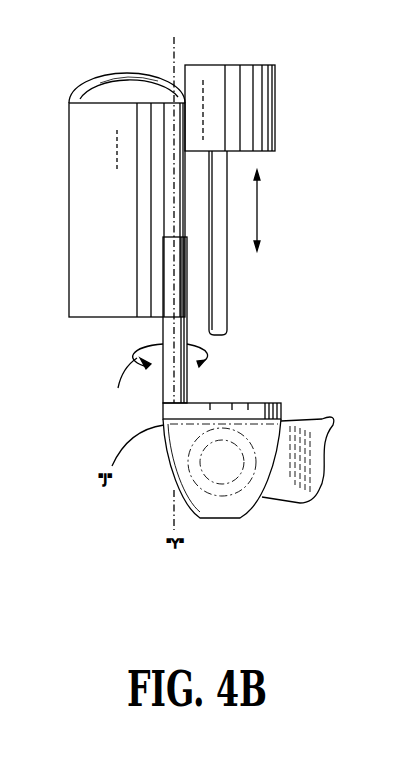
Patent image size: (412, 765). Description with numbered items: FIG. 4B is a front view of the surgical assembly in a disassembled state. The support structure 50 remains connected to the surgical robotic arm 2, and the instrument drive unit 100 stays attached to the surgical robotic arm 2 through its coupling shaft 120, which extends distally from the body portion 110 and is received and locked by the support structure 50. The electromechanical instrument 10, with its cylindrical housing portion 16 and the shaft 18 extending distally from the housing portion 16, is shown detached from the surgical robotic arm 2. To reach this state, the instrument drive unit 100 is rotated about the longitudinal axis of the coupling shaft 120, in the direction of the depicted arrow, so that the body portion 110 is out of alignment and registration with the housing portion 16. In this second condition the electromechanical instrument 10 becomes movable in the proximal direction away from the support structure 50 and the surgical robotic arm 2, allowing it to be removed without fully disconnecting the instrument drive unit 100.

The surgical robotic arm 2 is at (313, 420).
The electromechanical instrument 10 is at (278, 112).
The housing portion 16 is at (277, 76).
The shaft 18 is at (228, 290).
The support structure 50 is at (265, 403).
The instrument drive unit 100 is at (67, 141).
The body portion 110 is at (68, 218).
The coupling shaft 120 is at (160, 327).